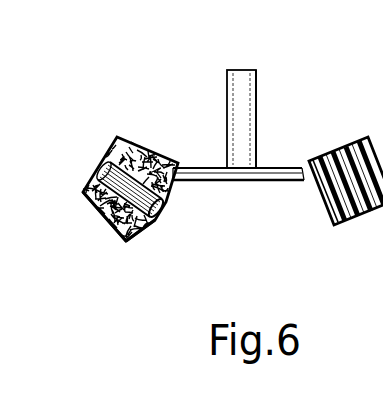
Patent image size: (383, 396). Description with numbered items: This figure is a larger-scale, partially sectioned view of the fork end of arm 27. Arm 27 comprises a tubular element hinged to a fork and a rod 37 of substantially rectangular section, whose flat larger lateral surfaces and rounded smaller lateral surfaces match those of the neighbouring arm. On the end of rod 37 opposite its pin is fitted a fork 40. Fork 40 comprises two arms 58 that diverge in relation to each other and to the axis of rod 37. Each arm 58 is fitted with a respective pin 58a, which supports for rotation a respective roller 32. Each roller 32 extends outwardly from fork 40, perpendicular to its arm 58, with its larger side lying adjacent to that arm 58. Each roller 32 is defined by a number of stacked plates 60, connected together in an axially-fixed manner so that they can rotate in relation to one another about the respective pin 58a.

The arm 27 is at (262, 111).
The roller 32 is at (134, 236).
The rod 37 is at (238, 90).
The fork 40 is at (205, 168).
The arm of fork 58 is at (150, 221).
The pin 58a is at (82, 192).
The stacked plates 60 is at (135, 141).